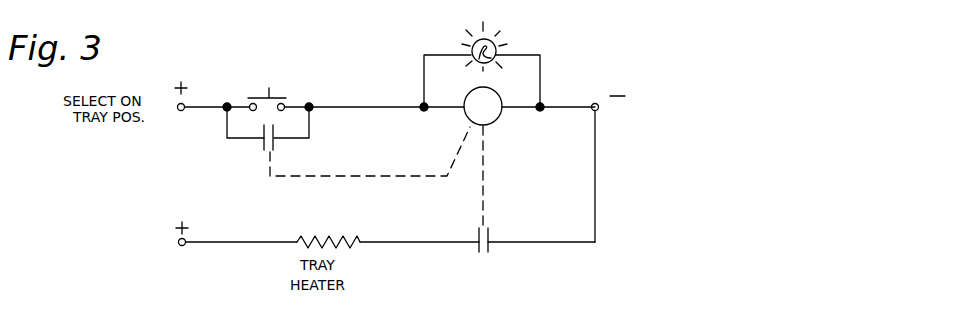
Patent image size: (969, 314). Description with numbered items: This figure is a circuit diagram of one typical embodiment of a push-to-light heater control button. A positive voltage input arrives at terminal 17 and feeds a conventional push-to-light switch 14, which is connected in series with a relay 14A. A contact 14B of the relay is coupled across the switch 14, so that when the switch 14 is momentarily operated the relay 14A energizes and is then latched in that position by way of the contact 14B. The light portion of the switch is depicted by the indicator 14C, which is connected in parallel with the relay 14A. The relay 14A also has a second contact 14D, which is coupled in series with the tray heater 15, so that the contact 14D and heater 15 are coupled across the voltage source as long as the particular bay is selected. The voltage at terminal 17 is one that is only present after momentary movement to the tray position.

The push-to-light switch 14 is at (269, 95).
The relay 14A is at (490, 124).
The contact 14B is at (273, 143).
The indicator 14C is at (497, 41).
The second contact 14D is at (489, 247).
The tray heater 15 is at (343, 236).
The terminal 17 is at (181, 111).